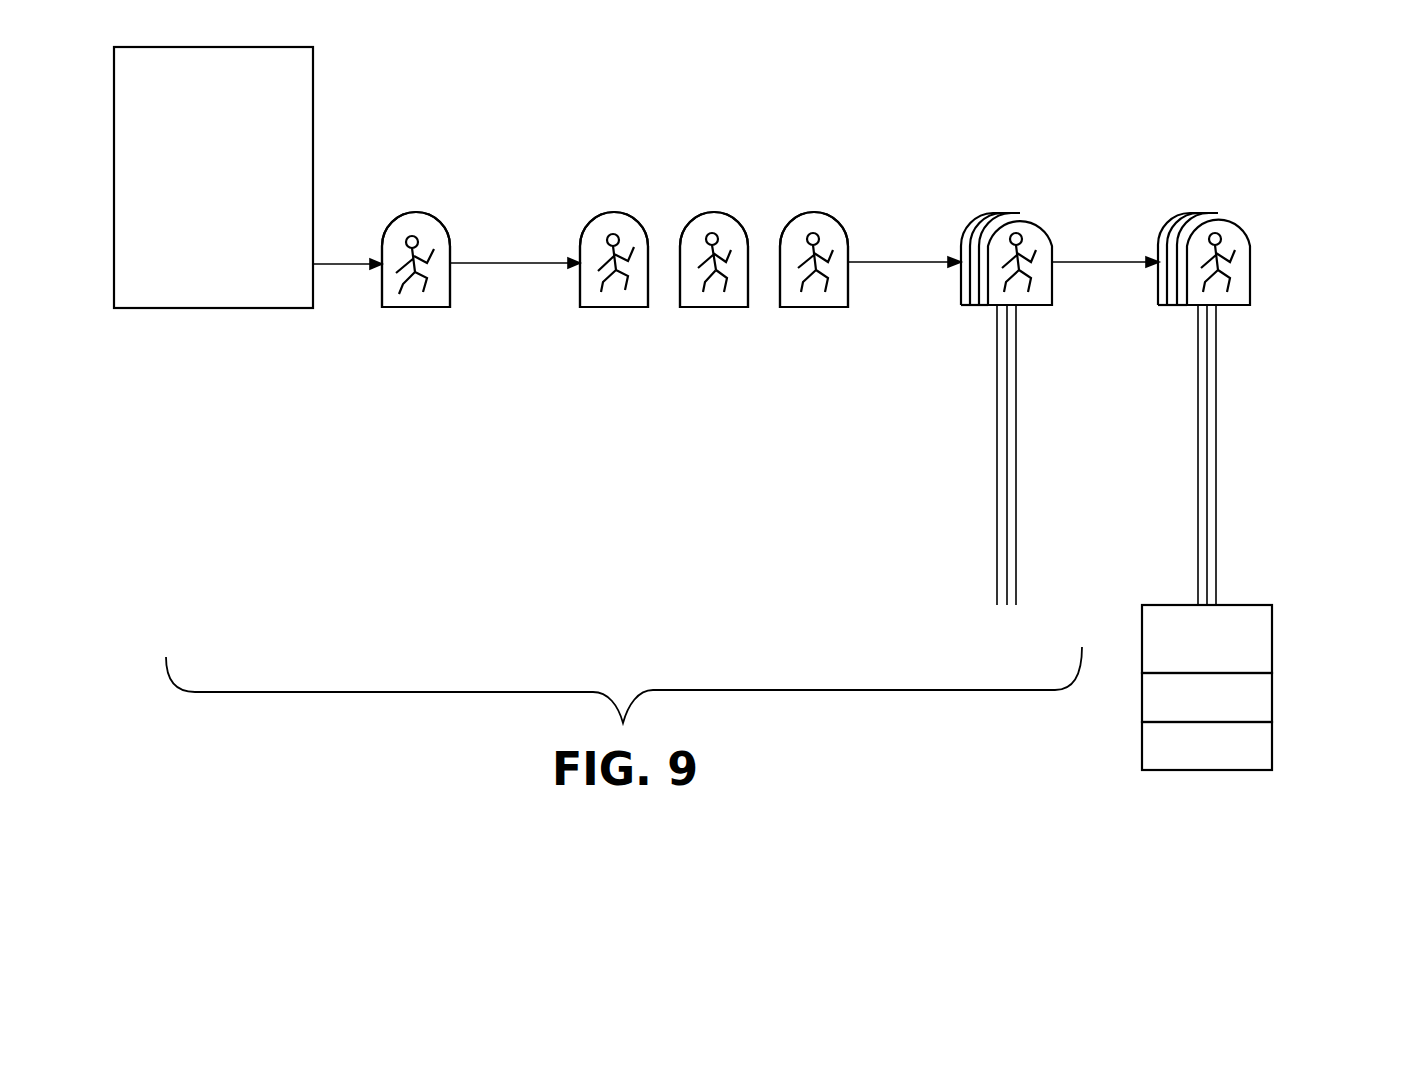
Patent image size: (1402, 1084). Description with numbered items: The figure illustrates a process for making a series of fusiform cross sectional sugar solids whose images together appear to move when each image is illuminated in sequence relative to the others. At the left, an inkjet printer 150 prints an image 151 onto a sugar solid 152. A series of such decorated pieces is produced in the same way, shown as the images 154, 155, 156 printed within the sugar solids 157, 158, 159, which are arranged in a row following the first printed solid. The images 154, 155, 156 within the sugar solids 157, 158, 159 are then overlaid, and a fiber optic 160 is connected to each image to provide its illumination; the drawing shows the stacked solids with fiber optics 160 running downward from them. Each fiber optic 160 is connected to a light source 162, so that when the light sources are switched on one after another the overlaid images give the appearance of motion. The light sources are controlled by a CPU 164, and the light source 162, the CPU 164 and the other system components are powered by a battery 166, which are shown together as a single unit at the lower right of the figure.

The inkjet printer 150 is at (228, 200).
The image 151 is at (412, 272).
The sugar solid 152 is at (421, 212).
The image 154 is at (613, 272).
The image 155 is at (716, 272).
The image 156 is at (816, 272).
The sugar solid 157 is at (614, 210).
The sugar solid 158 is at (716, 210).
The sugar solid 159 is at (816, 211).
The fiber optic 160 is at (997, 470).
The light source 162 is at (1272, 640).
The CPU 164 is at (1272, 703).
The battery 166 is at (1272, 750).